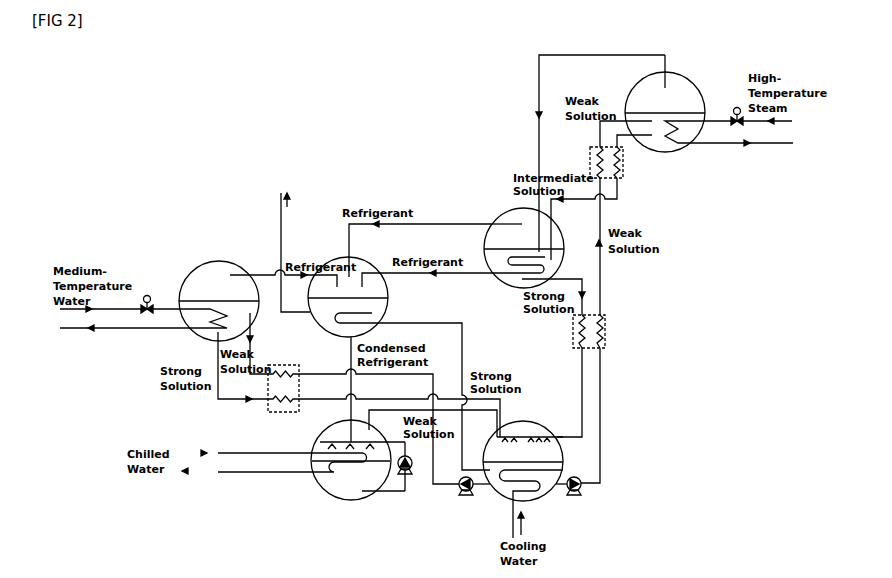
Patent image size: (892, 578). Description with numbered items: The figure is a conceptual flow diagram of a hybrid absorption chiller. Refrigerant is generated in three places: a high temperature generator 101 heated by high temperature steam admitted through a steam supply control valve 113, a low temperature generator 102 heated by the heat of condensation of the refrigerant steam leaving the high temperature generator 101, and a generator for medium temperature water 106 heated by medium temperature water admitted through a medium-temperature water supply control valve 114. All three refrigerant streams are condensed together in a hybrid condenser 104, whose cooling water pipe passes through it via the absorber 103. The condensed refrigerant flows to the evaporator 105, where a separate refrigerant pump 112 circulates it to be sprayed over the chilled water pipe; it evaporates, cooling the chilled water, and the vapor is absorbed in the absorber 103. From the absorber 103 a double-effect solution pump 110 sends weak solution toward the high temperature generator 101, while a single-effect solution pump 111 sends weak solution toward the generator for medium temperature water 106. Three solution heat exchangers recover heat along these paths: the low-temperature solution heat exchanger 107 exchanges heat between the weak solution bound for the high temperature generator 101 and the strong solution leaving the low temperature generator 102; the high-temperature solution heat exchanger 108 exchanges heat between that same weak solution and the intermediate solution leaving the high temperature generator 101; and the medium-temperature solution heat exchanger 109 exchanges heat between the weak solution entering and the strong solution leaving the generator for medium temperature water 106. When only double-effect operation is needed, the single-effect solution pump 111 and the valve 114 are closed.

The high temperature generator 101 is at (636, 88).
The low temperature generator 102 is at (503, 212).
The absorber 103 is at (552, 423).
The hybrid condenser 104 is at (335, 258).
The evaporator 105 is at (350, 500).
The generator for medium temperature water 106 is at (217, 262).
The low-temperature solution heat exchanger 107 is at (606, 326).
The high-temperature solution heat exchanger 108 is at (623, 162).
The medium-temperature solution heat exchanger 109 is at (282, 365).
The double-effect solution pump 110 is at (582, 493).
The single-effect solution pump 111 is at (470, 497).
The refrigerant pump 112 is at (409, 476).
The steam supply control valve 113 is at (738, 125).
The medium-temperature water supply control valve 114 is at (146, 295).